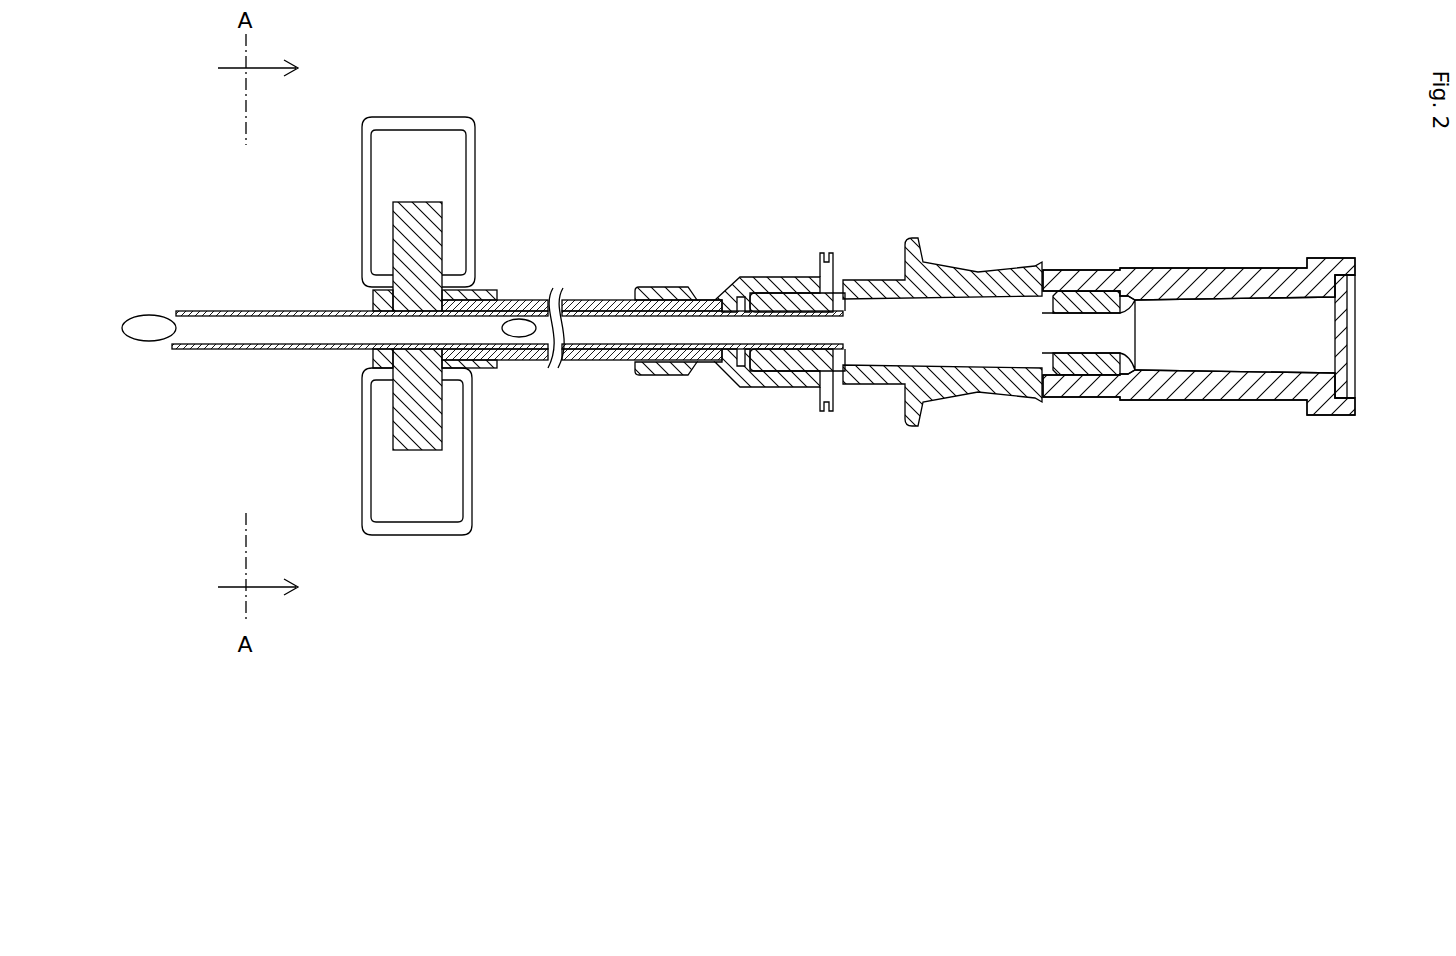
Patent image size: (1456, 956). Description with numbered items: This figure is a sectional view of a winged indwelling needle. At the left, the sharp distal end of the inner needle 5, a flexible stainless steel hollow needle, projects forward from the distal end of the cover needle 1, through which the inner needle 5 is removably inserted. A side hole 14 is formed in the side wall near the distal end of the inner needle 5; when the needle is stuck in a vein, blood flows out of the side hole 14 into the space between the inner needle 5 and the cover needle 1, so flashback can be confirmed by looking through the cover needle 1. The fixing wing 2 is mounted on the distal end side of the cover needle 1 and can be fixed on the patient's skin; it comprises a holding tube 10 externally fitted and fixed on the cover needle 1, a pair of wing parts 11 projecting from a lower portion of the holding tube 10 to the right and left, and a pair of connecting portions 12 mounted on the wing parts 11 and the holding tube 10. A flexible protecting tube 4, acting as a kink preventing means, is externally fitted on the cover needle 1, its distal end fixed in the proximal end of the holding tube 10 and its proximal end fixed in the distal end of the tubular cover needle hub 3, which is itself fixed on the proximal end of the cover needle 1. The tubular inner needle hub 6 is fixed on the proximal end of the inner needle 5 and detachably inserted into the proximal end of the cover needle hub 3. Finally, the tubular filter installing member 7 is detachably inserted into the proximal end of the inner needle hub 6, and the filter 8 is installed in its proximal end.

The cover needle 1 is at (212, 307).
The fixing wing 2 is at (503, 167).
The cover needle hub 3 is at (762, 273).
The protecting tube 4 is at (597, 299).
The inner needle 5 is at (148, 312).
The inner needle hub 6 is at (962, 262).
The filter installing member 7 is at (1210, 270).
The filter 8 is at (1335, 323).
The holding tube 10 is at (490, 282).
The wing parts 11 is at (363, 192).
The connecting portions 12 is at (393, 222).
The side hole 14 is at (538, 340).